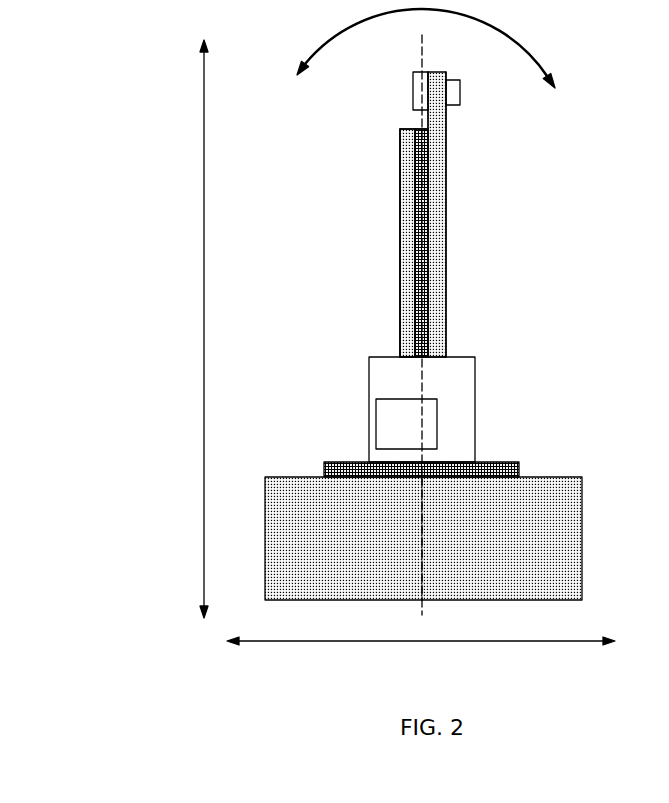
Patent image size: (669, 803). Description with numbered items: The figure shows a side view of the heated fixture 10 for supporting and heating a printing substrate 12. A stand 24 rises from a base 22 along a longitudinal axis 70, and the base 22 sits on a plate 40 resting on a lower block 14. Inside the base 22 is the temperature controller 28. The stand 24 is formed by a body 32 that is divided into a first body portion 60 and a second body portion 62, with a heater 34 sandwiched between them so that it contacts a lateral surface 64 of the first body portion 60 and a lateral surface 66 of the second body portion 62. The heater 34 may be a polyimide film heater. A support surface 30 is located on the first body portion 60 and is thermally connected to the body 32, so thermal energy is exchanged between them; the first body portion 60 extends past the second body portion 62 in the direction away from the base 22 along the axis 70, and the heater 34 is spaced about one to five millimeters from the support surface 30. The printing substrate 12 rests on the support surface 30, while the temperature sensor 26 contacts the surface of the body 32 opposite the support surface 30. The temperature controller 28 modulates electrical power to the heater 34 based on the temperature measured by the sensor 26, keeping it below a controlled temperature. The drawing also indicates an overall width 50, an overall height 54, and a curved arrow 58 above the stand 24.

The heated fixture 10 is at (258, 95).
The printing substrate 12 is at (412, 85).
The base 14 is at (525, 570).
The base 22 is at (456, 410).
The stand 24 is at (388, 243).
The temperature sensor 26 is at (460, 93).
The temperature controller 28 is at (406, 424).
The support surface 30 is at (438, 73).
The body 32 is at (393, 186).
The heater 34 is at (430, 245).
The mounting plate 40 is at (515, 468).
The width dimension 50 is at (508, 641).
The height dimension 54 is at (204, 356).
The rotation direction 58 is at (542, 61).
The first body portion 60 is at (440, 300).
The second body portion 62 is at (407, 268).
The lateral surface of the first body portion 64 is at (432, 328).
The lateral surface of the second body portion 66 is at (410, 318).
The longitudinal axis 70 is at (422, 518).